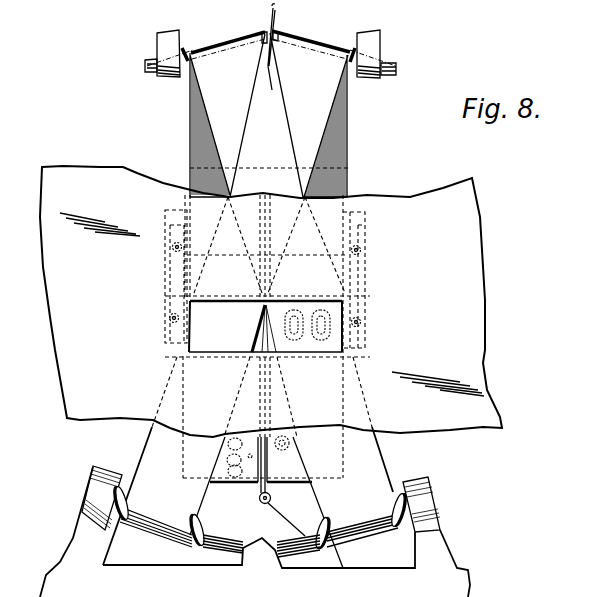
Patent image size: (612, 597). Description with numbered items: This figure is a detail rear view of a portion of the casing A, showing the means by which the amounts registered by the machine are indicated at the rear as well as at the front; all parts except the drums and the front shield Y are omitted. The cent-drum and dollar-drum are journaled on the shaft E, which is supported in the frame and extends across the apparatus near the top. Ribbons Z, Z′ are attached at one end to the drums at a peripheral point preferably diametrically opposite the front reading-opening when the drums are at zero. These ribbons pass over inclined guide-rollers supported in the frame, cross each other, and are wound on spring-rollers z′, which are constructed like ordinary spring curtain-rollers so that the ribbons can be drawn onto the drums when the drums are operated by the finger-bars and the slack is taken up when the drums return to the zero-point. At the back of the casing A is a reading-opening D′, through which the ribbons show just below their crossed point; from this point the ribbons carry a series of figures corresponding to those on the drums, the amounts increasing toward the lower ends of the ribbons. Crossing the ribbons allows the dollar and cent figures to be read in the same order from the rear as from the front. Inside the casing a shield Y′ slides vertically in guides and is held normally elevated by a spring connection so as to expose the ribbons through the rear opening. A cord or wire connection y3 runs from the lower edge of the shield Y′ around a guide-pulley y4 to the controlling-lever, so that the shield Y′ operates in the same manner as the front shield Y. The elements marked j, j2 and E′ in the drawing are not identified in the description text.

The casing A is at (271, 301).
The ribbon Z is at (222, 46).
The ribbon Z′ is at (308, 45).
The needle j is at (266, 35).
The needle guide j2 is at (306, 100).
The shield Y is at (167, 208).
The shield Y′ is at (367, 213).
The reading-opening D′ is at (343, 302).
The shaft E is at (235, 483).
The right lower type panel E′ is at (288, 483).
The guide-pulley y4 is at (260, 500).
The cord or wire connection y3 is at (290, 504).
The spring-roller z′ is at (243, 540).